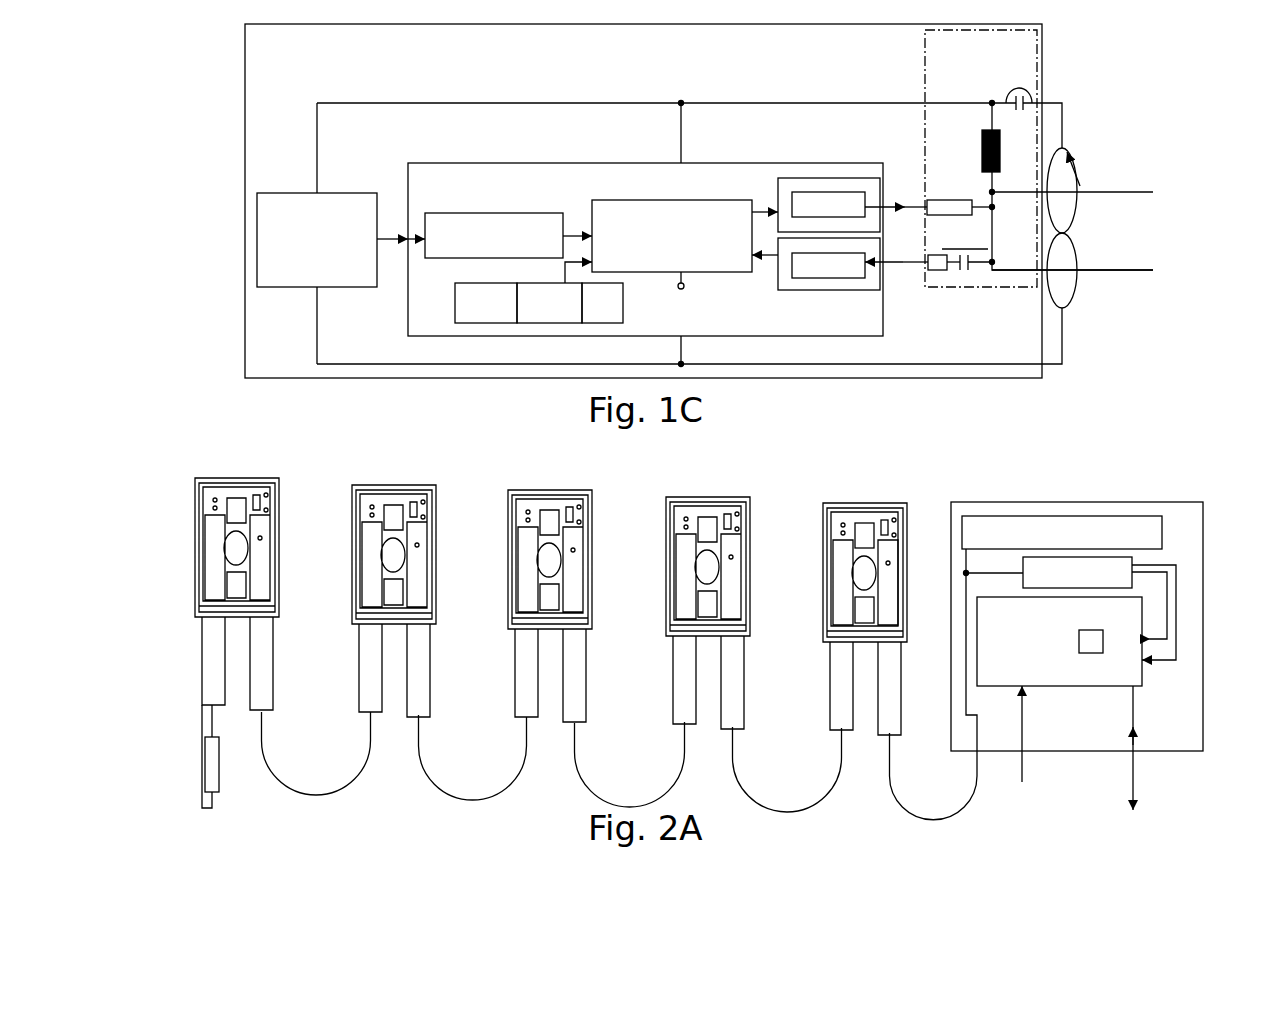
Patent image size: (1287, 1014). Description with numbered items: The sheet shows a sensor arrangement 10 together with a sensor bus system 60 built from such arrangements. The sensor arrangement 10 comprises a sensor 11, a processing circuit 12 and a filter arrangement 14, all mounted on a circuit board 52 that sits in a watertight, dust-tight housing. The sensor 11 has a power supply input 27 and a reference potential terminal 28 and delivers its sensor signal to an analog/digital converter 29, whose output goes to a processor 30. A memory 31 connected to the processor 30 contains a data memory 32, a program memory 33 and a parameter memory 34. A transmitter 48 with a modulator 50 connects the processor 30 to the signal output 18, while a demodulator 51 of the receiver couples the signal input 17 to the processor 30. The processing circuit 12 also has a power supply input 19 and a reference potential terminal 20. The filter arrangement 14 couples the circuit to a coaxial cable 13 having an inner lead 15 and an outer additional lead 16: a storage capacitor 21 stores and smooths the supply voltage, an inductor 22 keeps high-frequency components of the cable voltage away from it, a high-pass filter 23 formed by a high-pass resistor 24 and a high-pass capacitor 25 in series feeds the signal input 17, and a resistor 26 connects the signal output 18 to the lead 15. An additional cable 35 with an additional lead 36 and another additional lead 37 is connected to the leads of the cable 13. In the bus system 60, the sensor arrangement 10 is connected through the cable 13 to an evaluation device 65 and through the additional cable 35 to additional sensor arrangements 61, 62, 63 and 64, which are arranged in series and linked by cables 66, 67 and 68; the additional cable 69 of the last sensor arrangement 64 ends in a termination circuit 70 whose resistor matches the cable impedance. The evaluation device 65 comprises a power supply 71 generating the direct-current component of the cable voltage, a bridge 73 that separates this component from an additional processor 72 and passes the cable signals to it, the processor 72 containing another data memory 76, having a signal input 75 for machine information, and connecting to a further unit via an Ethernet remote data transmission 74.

In FIG. 1C, the sensor arrangement 10 is at (1128, 70).
In FIG. 2A, the sensor arrangement 10 is at (887, 503).
In FIG. 1C, the sensor 11 is at (258, 193).
In FIG. 2A, the sensor 11 is at (866, 523).
In FIG. 1C, the processing circuit 12 is at (430, 163).
In FIG. 2A, the processing circuit 12 is at (866, 623).
In FIG. 1C, the cable 13 is at (1120, 182).
In FIG. 2A, the cable 13 is at (935, 818).
In FIG. 1C, the filter arrangement 14 is at (925, 56).
In FIG. 2A, the filter arrangement 14 is at (890, 520).
In FIG. 1C, the lead 15 is at (1135, 192).
In FIG. 1C, the additional lead 16 is at (1078, 200).
In FIG. 1C, the signal input 17 is at (880, 262).
In FIG. 1C, the signal output 18 is at (880, 207).
In FIG. 1C, the power supply input 19 is at (680, 160).
In FIG. 1C, the reference potential terminal 20 is at (680, 340).
In FIG. 1C, the storage capacitor 21 is at (1028, 108).
In FIG. 1C, the inductor 22 is at (982, 136).
In FIG. 1C, the high-pass filter 23 is at (958, 244).
In FIG. 1C, the high-pass resistor 24 is at (935, 270).
In FIG. 1C, the high-pass capacitor 25 is at (975, 270).
In FIG. 1C, the resistor 26 is at (940, 200).
In FIG. 1C, the power supply input 27 is at (317, 193).
In FIG. 1C, the reference potential terminal 28 is at (317, 288).
In FIG. 1C, the analog/digital converter 29 is at (468, 213).
In FIG. 1C, the processor 30 is at (727, 200).
In FIG. 1C, the memory 31 is at (425, 330).
In FIG. 1C, the data memory 32 is at (455, 294).
In FIG. 1C, the program memory 33 is at (543, 323).
In FIG. 1C, the parameter memory 34 is at (623, 296).
In FIG. 1C, the additional cable 35 is at (1110, 290).
In FIG. 2A, the additional cable 35 is at (762, 808).
In FIG. 1C, the additional lead 36 is at (1132, 272).
In FIG. 1C, the other additional lead 37 is at (1078, 285).
In FIG. 1C, the transmitter 48 is at (796, 178).
In FIG. 1C, the modulator 50 is at (840, 192).
In FIG. 1C, the demodulator 51 is at (840, 278).
In FIG. 1C, the circuit board 52 is at (245, 238).
In FIG. 2A, the circuit board 52 is at (848, 517).
In FIG. 2A, the sensor bus system 60 is at (1135, 482).
In FIG. 2A, the additional sensor arrangement 61 is at (706, 497).
In FIG. 2A, the additional sensor arrangement 62 is at (548, 490).
In FIG. 2A, the additional sensor arrangement 63 is at (390, 485).
In FIG. 2A, the last sensor arrangement 64 is at (233, 478).
In FIG. 2A, the evaluation device 65 is at (1015, 502).
In FIG. 2A, the cable 66 is at (610, 804).
In FIG. 2A, the cable 67 is at (448, 797).
In FIG. 2A, the cable 68 is at (300, 792).
In FIG. 2A, the additional cable 69 is at (201, 725).
In FIG. 2A, the termination circuit 70 is at (219, 757).
In FIG. 2A, the power supply 71 is at (1162, 540).
In FIG. 2A, the additional processor 72 is at (1075, 686).
In FIG. 2A, the bridge 73 is at (1132, 560).
In FIG. 2A, the Ethernet remote data transmission 74 is at (1133, 778).
In FIG. 2A, the signal input 75 is at (1022, 770).
In FIG. 2A, the additional data memory 76 is at (1103, 645).